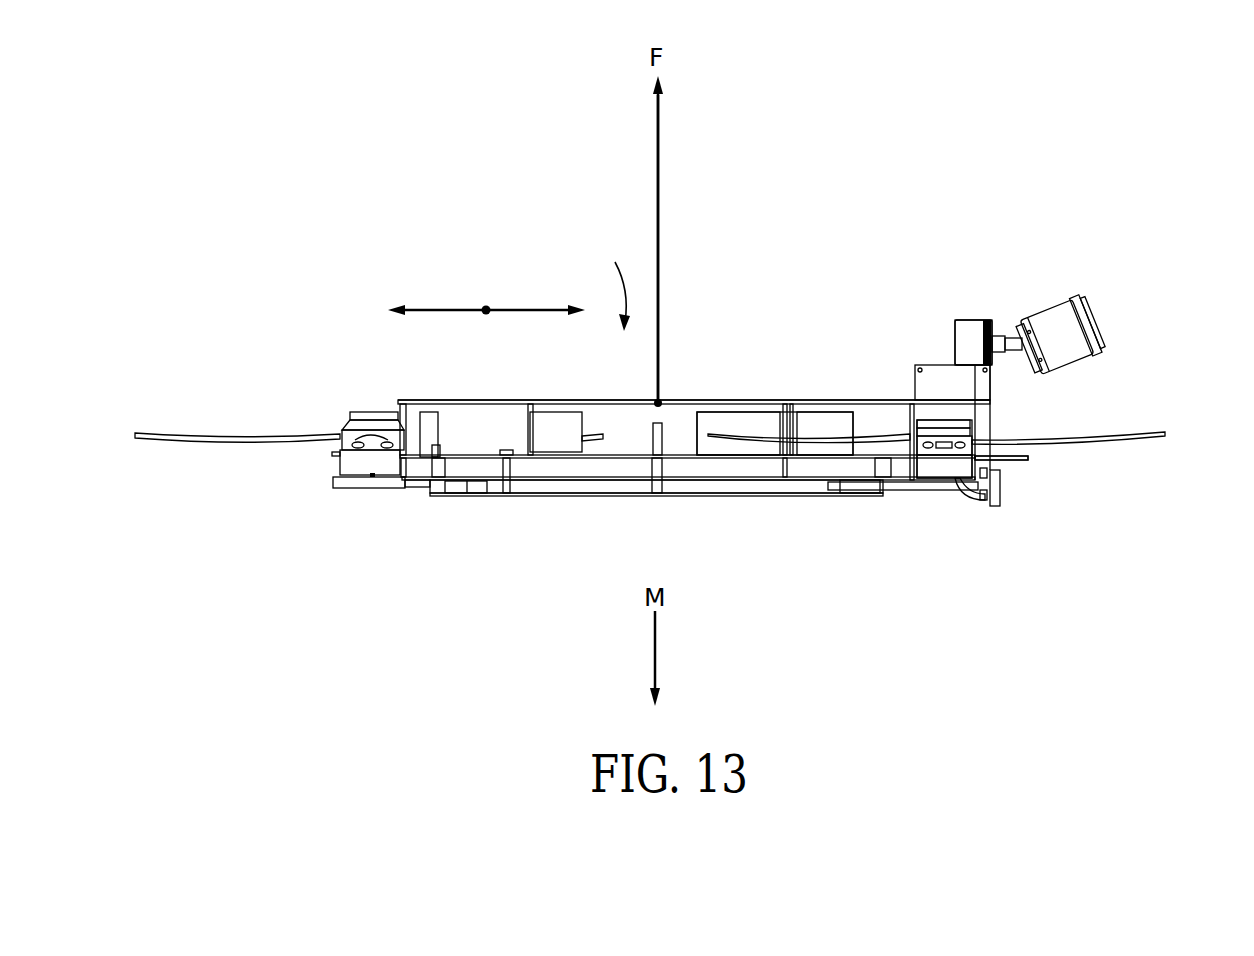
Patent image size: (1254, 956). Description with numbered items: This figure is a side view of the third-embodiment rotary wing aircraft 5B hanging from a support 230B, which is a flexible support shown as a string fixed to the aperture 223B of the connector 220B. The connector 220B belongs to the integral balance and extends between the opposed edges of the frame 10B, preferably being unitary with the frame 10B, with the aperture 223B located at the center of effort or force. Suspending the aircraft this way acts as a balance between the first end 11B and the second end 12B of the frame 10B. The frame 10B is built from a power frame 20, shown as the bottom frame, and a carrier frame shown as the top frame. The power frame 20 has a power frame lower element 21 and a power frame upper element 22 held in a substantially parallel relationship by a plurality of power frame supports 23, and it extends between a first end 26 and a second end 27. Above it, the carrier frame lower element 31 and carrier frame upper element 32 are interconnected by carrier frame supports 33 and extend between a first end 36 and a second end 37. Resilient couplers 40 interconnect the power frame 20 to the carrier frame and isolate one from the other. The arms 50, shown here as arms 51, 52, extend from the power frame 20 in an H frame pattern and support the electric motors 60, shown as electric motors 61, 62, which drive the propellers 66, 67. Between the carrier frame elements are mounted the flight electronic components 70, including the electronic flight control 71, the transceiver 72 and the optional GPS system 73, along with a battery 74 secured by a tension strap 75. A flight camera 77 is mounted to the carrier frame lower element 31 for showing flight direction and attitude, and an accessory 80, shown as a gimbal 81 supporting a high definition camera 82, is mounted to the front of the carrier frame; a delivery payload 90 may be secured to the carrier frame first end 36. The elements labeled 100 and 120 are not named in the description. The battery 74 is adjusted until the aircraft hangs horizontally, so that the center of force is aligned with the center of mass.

The rotary wing aircraft 5B is at (322, 258).
The frame 10B is at (440, 403).
The first end 11B is at (1013, 460).
The second end 12B is at (398, 402).
The power frame 20 is at (512, 496).
The power frame lower element 21 is at (560, 497).
The power frame upper element 22 is at (740, 482).
The power frame supports 23 is at (620, 483).
The first end 26 is at (881, 497).
The second end 27 is at (432, 497).
The carrier frame lower element 31 is at (470, 445).
The carrier frame upper element 32 is at (880, 401).
The carrier frame supports 33 is at (791, 420).
The first end 36 is at (1013, 462).
The second end 37 is at (401, 404).
The resilient couplers 40 is at (437, 465).
The arms 50 is at (1025, 579).
The arm 51 is at (925, 483).
The arm 52 is at (340, 487).
The electric motors 60 is at (1100, 527).
The electric motor 61 is at (947, 458).
The electric motor 62 is at (338, 456).
The propeller 66 is at (1150, 436).
The propeller 67 is at (190, 432).
The flight electronic components 70 is at (810, 322).
The electronic flight control 71 is at (706, 425).
The transceiver 72 is at (749, 418).
The GPS system 73 is at (836, 418).
The battery 74 is at (350, 418).
The tension strap 75 is at (422, 436).
The flight camera 77 is at (995, 498).
The accessory 80 is at (1140, 268).
The gimbal 81 is at (975, 324).
The high definition camera 82 is at (1044, 300).
The delivery payload 90 is at (1150, 343).
The base plate 100 is at (778, 486).
The base block 120 is at (533, 488).
The connector 220B is at (620, 282).
The aperture 223B is at (655, 400).
The support 230B is at (662, 214).